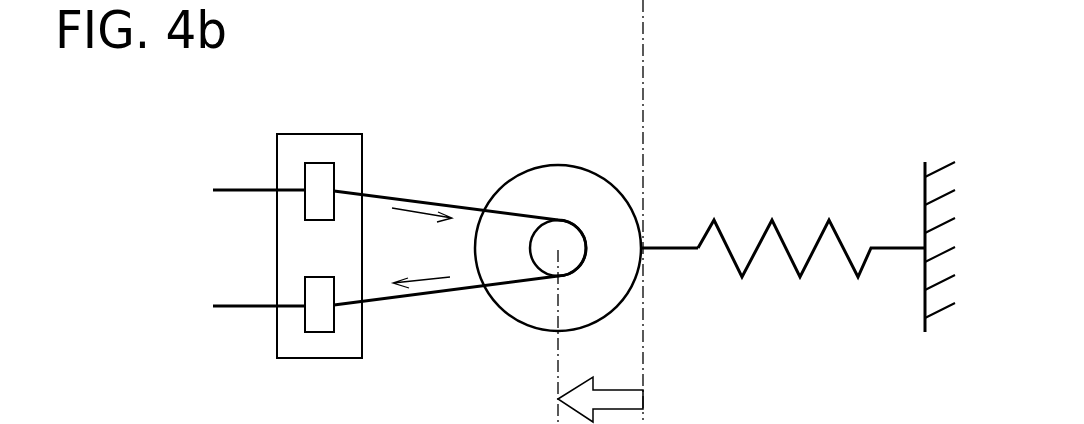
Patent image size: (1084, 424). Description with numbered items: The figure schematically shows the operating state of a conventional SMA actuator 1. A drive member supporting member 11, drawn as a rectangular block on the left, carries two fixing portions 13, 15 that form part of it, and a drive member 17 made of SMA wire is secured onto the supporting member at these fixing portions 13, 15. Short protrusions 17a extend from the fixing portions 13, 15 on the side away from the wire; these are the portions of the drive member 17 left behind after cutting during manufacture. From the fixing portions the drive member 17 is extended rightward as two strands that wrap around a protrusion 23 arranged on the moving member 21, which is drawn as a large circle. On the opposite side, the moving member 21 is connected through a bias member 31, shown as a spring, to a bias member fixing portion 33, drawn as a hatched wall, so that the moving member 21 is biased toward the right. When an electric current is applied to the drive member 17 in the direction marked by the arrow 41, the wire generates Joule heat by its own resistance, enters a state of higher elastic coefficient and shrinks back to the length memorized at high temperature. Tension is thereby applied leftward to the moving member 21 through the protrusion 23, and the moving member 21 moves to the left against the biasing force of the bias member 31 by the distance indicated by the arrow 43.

The SMA actuator 1 is at (857, 106).
The drive member supporting member 11 is at (318, 134).
The fixing portion 13 is at (334, 172).
The fixing portion 15 is at (334, 316).
The drive member 17 is at (467, 206).
The protrusions 17a is at (238, 190).
The moving member 21 is at (560, 165).
The protrusion 23 is at (568, 237).
The bias member 31 is at (829, 220).
The bias member fixing portion 33 is at (925, 199).
The arrow 41 is at (415, 218).
The arrow 43 is at (617, 390).